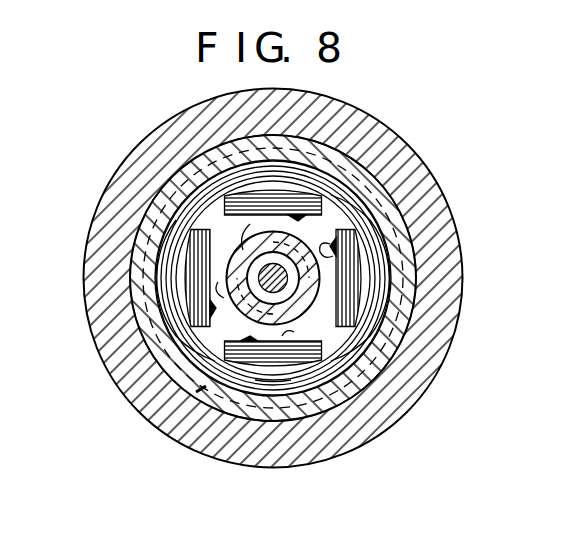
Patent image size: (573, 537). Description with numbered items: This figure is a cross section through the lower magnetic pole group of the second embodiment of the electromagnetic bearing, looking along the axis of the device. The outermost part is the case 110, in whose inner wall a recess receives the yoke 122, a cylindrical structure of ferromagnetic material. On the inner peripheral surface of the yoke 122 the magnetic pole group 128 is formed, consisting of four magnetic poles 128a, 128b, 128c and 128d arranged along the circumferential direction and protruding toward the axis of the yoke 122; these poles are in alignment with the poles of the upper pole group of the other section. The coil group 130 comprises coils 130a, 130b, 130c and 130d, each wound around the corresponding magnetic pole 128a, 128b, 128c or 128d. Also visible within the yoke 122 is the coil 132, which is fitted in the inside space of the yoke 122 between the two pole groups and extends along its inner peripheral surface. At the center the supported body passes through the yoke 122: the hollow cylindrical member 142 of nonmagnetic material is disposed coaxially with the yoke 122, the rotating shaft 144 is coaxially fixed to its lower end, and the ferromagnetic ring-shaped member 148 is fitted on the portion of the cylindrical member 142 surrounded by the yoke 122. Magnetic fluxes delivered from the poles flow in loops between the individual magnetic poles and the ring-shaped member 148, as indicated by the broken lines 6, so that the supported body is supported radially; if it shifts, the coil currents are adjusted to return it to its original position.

The broken lines 6 is at (270, 275).
The case 110 is at (422, 383).
The yoke 122 is at (372, 328).
The magnetic pole group 128 is at (273, 278).
The magnetic pole 128a is at (178, 358).
The magnetic pole 128b is at (307, 400).
The magnetic pole 128c is at (408, 245).
The magnetic pole 128d is at (340, 158).
The coil group 130 is at (150, 283).
The coil 130a is at (160, 318).
The coil 130b is at (225, 410).
The coil 130c is at (405, 292).
The coil 130d is at (337, 167).
The coil 132 is at (208, 398).
The hollow cylindrical member 142 is at (282, 336).
The rotating shaft 144 is at (285, 232).
The ring-shaped member 148 is at (274, 382).